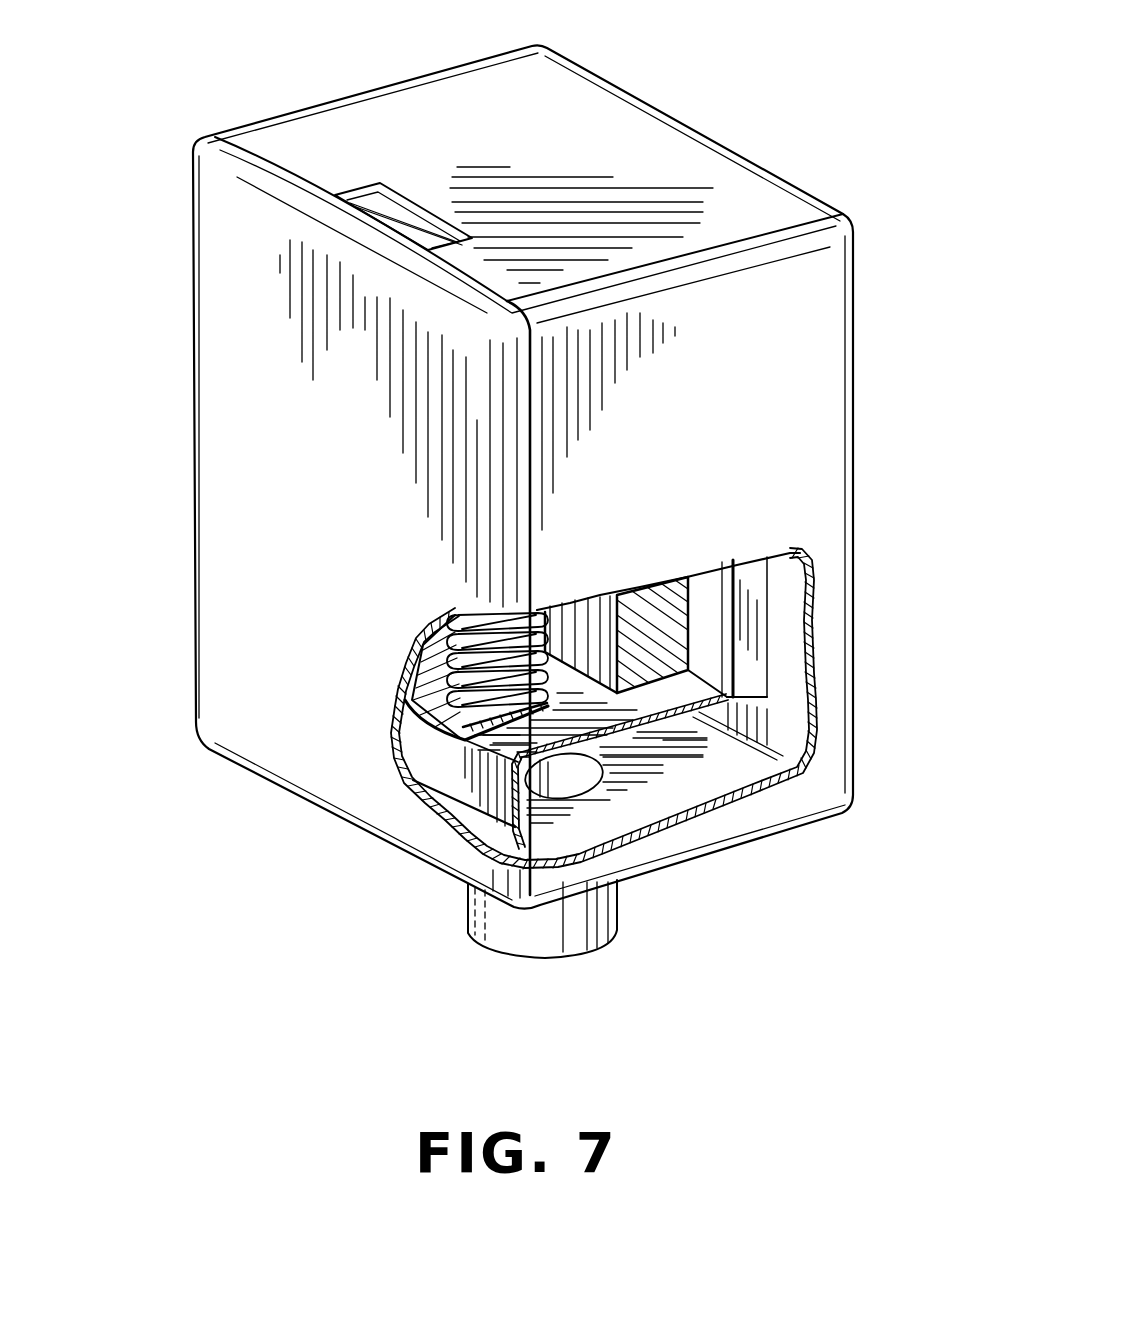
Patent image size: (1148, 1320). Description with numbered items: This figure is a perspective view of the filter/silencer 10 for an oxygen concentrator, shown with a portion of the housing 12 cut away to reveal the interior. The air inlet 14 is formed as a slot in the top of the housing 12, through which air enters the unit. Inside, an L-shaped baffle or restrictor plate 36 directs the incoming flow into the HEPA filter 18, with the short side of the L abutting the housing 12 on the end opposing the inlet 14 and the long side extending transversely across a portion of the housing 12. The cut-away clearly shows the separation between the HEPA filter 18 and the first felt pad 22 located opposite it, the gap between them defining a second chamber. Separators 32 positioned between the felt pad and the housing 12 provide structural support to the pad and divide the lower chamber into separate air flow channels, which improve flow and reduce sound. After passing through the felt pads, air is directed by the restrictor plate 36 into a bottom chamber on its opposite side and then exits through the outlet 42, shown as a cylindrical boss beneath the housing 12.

The filter/silencer 10 is at (777, 108).
The housing 12 is at (218, 323).
The air inlet 14 is at (372, 190).
The HEPA filter 18 is at (447, 682).
The first felt pad 22 is at (657, 613).
The separators 32 is at (757, 637).
The restrictor plate 36 is at (467, 787).
The outlet 42 is at (522, 945).